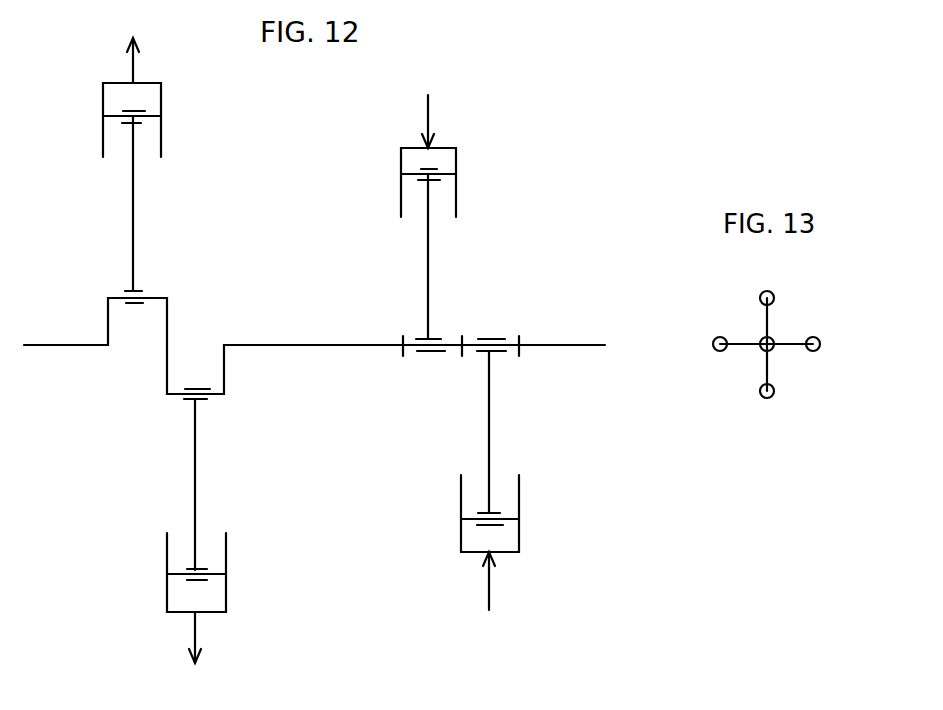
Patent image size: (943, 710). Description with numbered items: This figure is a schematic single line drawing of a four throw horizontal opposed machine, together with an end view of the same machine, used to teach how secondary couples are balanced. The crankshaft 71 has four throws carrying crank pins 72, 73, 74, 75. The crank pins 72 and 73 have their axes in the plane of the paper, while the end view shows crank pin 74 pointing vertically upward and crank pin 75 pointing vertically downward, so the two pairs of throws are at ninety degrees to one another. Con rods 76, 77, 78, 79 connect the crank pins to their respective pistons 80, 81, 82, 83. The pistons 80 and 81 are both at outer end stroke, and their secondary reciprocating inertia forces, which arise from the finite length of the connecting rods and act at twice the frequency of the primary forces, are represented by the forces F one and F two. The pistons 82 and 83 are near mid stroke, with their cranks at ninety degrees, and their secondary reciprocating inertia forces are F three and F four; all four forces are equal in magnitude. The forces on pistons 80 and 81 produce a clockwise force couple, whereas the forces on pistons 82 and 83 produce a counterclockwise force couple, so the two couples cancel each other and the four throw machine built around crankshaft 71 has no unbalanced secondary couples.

In FIG. 12, the crankshaft 71 is at (51, 346).
In FIG. 12, the crank pin 72 is at (118, 296).
In FIG. 13, the crank pin 72 is at (766, 291).
In FIG. 12, the crank pin 73 is at (218, 396).
In FIG. 13, the crank pin 73 is at (768, 398).
In FIG. 12, the crank pin 74 is at (410, 343).
In FIG. 13, the crank pin 74 is at (713, 343).
In FIG. 12, the crank pin 75 is at (512, 348).
In FIG. 13, the crank pin 75 is at (821, 344).
In FIG. 12, the con rod 76 is at (133, 236).
In FIG. 12, the con rod 77 is at (193, 486).
In FIG. 12, the con rod 78 is at (428, 274).
In FIG. 12, the con rod 79 is at (489, 434).
In FIG. 12, the piston 80 is at (103, 135).
In FIG. 12, the piston 81 is at (167, 560).
In FIG. 12, the piston 82 is at (401, 193).
In FIG. 12, the piston 83 is at (521, 500).